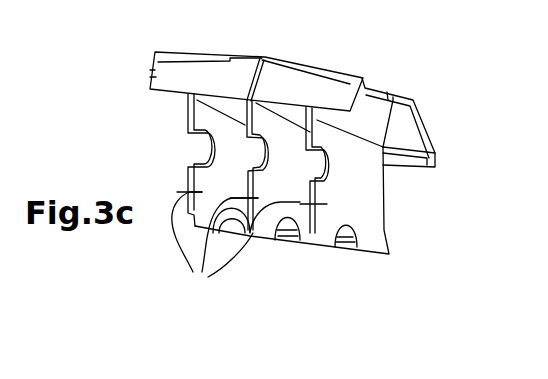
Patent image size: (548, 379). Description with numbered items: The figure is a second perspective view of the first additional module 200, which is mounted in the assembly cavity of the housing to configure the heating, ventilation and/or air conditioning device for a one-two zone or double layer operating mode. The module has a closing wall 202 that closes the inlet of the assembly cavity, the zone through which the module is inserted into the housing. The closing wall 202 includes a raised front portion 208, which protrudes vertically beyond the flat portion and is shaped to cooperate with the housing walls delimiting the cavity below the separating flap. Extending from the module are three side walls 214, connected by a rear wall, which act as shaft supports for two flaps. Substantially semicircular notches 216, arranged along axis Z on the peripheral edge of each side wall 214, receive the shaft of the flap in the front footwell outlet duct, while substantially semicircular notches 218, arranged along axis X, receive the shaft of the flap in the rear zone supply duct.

The first additional module 200 is at (427, 97).
The closing wall 202 is at (372, 84).
The raised front portion 208 is at (237, 77).
The side walls 214 is at (215, 252).
The notches 216 is at (190, 152).
The notches 218 is at (345, 255).